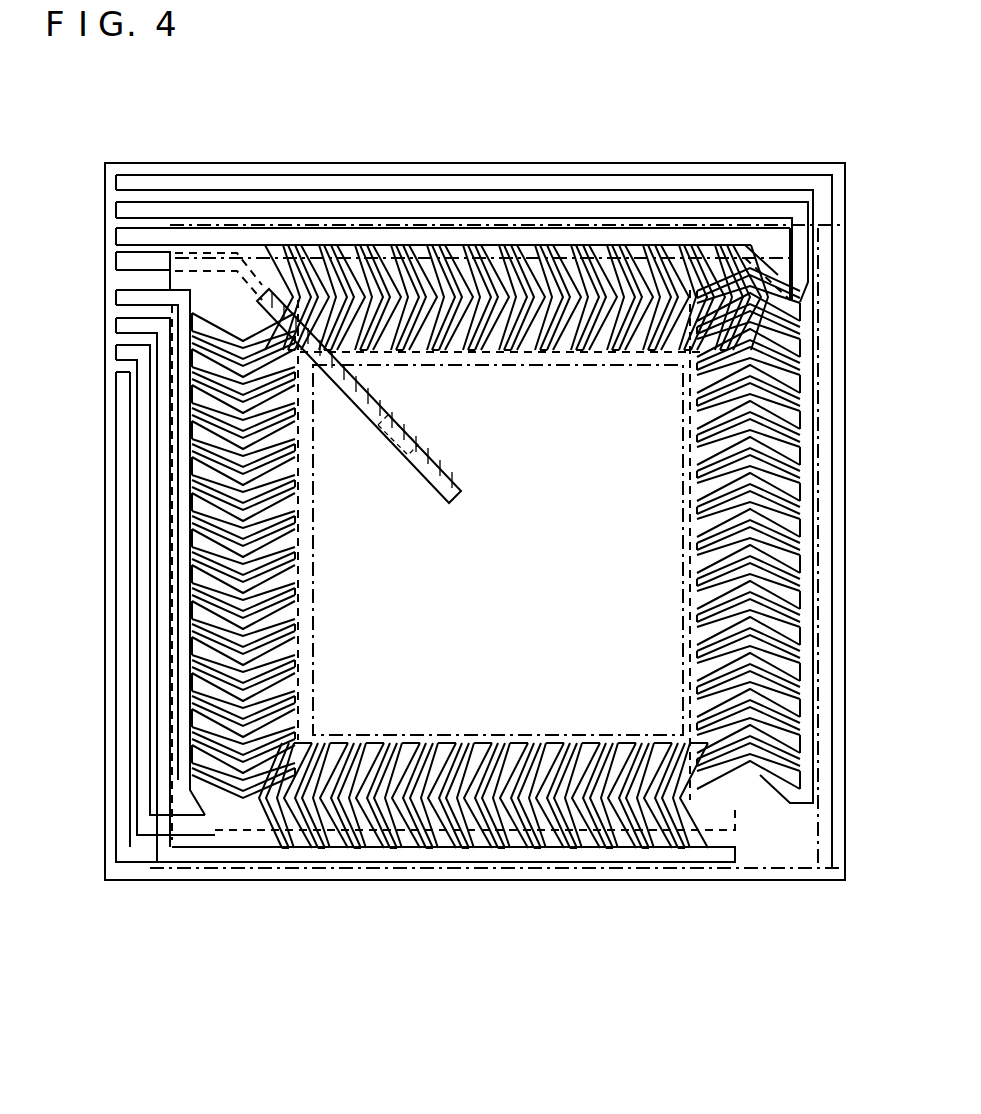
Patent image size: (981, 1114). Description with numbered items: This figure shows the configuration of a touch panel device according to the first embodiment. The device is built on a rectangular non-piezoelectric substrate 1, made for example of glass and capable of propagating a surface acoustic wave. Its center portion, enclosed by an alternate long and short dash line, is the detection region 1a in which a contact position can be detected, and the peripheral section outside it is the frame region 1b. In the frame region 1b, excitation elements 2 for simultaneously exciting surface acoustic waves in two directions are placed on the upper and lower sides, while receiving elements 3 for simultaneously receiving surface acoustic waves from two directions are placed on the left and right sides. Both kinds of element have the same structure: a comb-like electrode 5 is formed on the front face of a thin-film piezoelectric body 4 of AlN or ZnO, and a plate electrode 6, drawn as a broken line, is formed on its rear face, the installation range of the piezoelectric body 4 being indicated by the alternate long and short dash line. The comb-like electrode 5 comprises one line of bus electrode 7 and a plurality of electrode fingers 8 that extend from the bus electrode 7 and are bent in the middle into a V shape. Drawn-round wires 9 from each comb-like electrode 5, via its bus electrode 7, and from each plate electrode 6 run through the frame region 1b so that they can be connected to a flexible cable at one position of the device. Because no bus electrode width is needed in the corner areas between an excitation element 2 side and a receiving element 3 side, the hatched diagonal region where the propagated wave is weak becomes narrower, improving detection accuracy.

The non-piezoelectric substrate 1 is at (775, 165).
The detection region 1a is at (580, 368).
The frame region 1b is at (625, 175).
The excitation element 2 is at (468, 240).
The receiving element 3 is at (186, 540).
The piezoelectric body 4 is at (735, 225).
The comb-like electrode 5 is at (535, 240).
The plate electrode 6 is at (285, 240).
The bus electrode 7 is at (415, 235).
The electrode fingers 8 is at (330, 270).
The drawn-round wires 9 is at (160, 182).